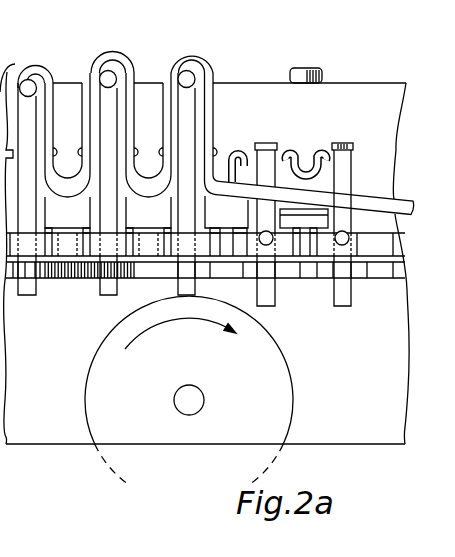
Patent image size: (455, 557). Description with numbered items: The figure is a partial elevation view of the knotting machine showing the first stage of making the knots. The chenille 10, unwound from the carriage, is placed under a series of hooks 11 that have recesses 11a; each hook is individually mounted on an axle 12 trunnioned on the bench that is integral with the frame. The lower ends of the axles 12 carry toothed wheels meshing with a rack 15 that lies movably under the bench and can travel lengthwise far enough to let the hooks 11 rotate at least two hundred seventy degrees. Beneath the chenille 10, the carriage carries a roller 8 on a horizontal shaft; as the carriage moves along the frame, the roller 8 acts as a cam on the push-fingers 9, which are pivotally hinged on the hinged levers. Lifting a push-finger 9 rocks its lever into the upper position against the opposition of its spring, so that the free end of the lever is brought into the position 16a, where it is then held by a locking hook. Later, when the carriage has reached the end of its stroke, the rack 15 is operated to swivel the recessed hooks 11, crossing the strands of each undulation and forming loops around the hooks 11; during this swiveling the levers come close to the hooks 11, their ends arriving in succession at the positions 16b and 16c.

The roller 8 is at (93, 373).
The push-fingers 9 is at (32, 299).
The chenille 10 is at (362, 210).
The hooks 11 is at (342, 150).
The recesses 11a is at (303, 163).
The axles 12 is at (307, 242).
The rack 15 is at (263, 244).
The upper position of the lever ends 16a is at (108, 76).
The intermediate position of the lever ends 16b is at (30, 86).
The final position of the lever ends 16c is at (9, 67).